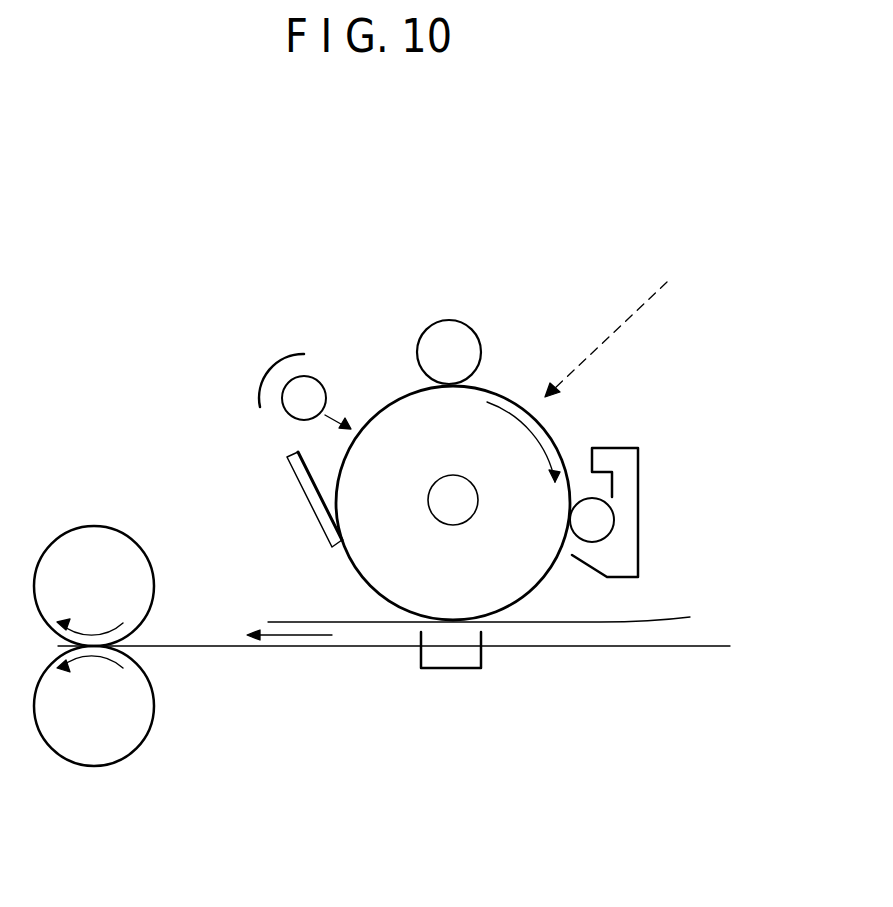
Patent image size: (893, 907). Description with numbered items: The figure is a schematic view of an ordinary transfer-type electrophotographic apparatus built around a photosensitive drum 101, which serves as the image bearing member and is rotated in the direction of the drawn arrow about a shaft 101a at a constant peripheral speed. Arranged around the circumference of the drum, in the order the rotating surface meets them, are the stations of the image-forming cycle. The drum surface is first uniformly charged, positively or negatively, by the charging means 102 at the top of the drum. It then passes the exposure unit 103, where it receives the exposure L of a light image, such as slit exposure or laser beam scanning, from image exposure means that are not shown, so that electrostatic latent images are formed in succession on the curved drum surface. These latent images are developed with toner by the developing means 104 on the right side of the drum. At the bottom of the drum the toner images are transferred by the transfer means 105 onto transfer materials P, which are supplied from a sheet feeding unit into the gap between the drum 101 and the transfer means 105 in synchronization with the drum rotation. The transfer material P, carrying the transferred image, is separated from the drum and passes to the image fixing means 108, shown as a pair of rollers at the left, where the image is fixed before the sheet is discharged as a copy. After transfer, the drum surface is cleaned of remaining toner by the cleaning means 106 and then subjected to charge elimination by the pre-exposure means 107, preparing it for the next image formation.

The photosensitive drum 101 is at (403, 395).
The shaft 101a is at (438, 518).
The charging means 102 is at (467, 332).
The exposure unit 103 is at (557, 447).
The developing means 104 is at (632, 483).
The transfer means 105 is at (467, 658).
The cleaning means 106 is at (307, 502).
The pre-exposure means 107 is at (273, 367).
The image fixing means 108 is at (112, 527).
The exposure L is at (615, 326).
The transfer material P is at (665, 622).